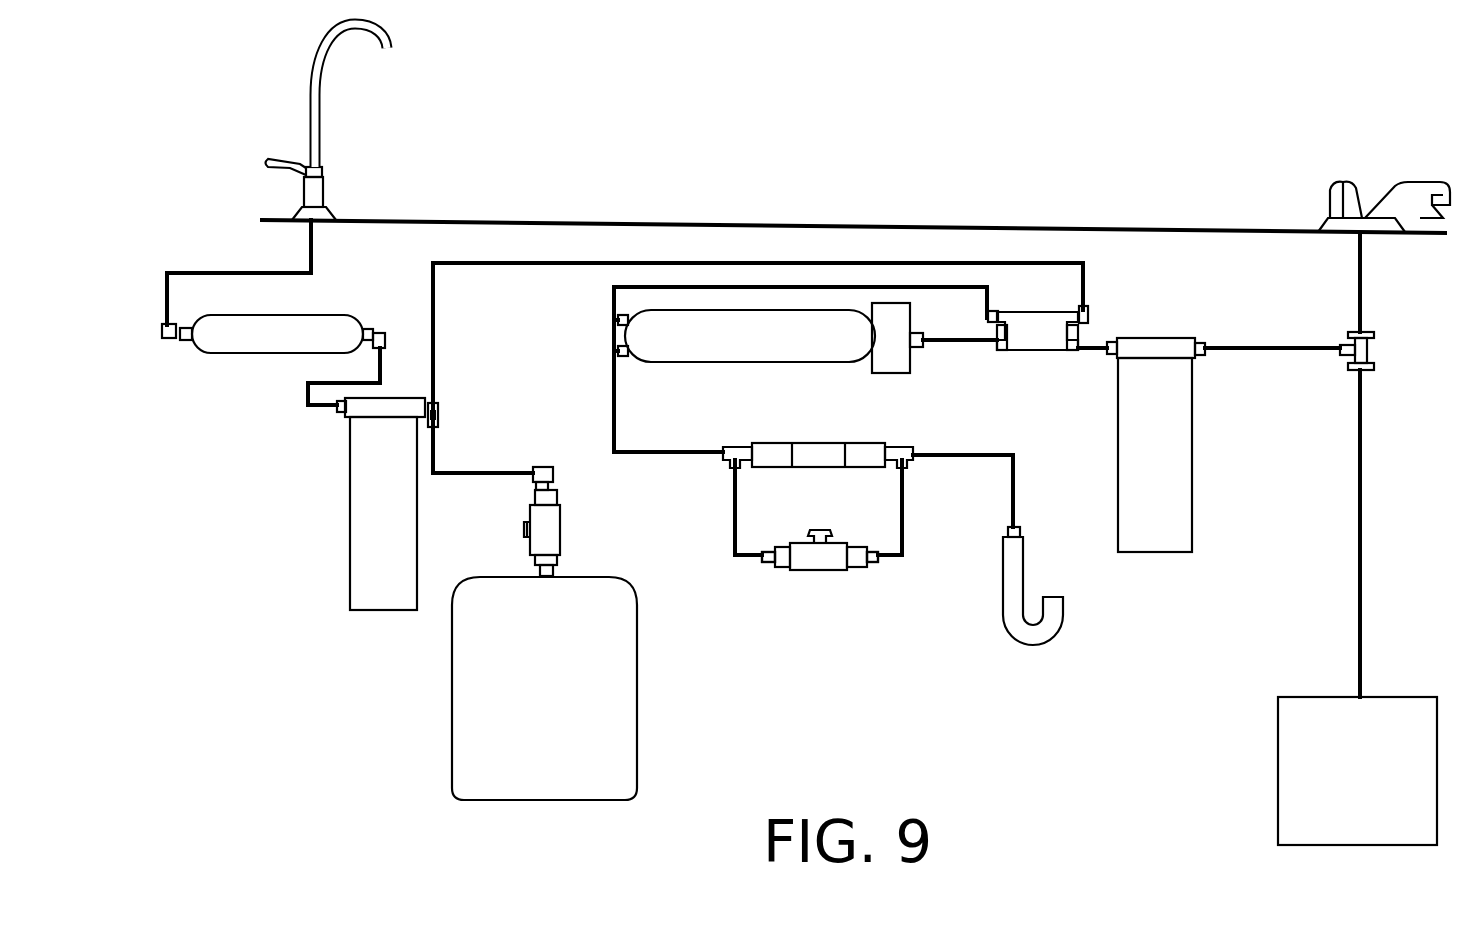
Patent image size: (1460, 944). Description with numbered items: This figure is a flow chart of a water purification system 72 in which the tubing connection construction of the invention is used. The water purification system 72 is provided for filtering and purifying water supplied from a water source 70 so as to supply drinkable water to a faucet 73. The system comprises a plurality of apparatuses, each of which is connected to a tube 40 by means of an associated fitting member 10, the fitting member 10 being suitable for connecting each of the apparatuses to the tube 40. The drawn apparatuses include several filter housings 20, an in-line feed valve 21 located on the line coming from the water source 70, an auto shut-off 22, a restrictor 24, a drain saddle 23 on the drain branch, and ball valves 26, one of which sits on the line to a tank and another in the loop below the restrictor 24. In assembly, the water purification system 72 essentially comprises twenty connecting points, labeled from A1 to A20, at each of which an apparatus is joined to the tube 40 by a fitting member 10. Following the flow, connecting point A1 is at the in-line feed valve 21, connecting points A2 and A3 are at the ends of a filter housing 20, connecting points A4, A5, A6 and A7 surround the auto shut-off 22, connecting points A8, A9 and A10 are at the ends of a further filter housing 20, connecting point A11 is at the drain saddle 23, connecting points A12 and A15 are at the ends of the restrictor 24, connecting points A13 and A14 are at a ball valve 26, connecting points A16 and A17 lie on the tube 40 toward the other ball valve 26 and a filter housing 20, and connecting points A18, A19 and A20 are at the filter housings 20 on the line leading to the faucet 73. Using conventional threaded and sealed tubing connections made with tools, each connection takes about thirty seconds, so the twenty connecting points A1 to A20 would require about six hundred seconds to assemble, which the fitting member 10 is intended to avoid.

The faucet 73 is at (320, 126).
The filter housing 20 is at (268, 355).
The connecting point A20 is at (180, 346).
The connecting point A19 is at (388, 342).
The connecting point A18 is at (336, 414).
The connecting point A17 is at (441, 422).
The fitting member 10 is at (438, 408).
The tube 40 is at (485, 471).
The connecting point A16 is at (538, 462).
The ball valve 26 is at (566, 537).
The connecting point A9 is at (612, 318).
The connecting point A10 is at (612, 350).
The restrictor 24 is at (826, 445).
The connecting point A15 is at (722, 462).
The connecting point A12 is at (913, 462).
The connecting point A14 is at (760, 566).
The connecting point A13 is at (882, 565).
The water purification system 72 is at (845, 582).
The connecting point A11 is at (1022, 530).
The drain saddle 23 is at (1056, 632).
The connecting point A8 is at (918, 352).
The connecting point A7 is at (996, 310).
The connecting point A6 is at (996, 353).
The connecting point A5 is at (1080, 355).
The auto shut-off 22 is at (1043, 352).
The connecting point A4 is at (1090, 320).
The connecting point A3 is at (1112, 340).
The connecting point A2 is at (1204, 358).
The connecting point A1 is at (1348, 338).
The in-line feed valve 21 is at (1375, 356).
The water source 70 is at (1282, 800).